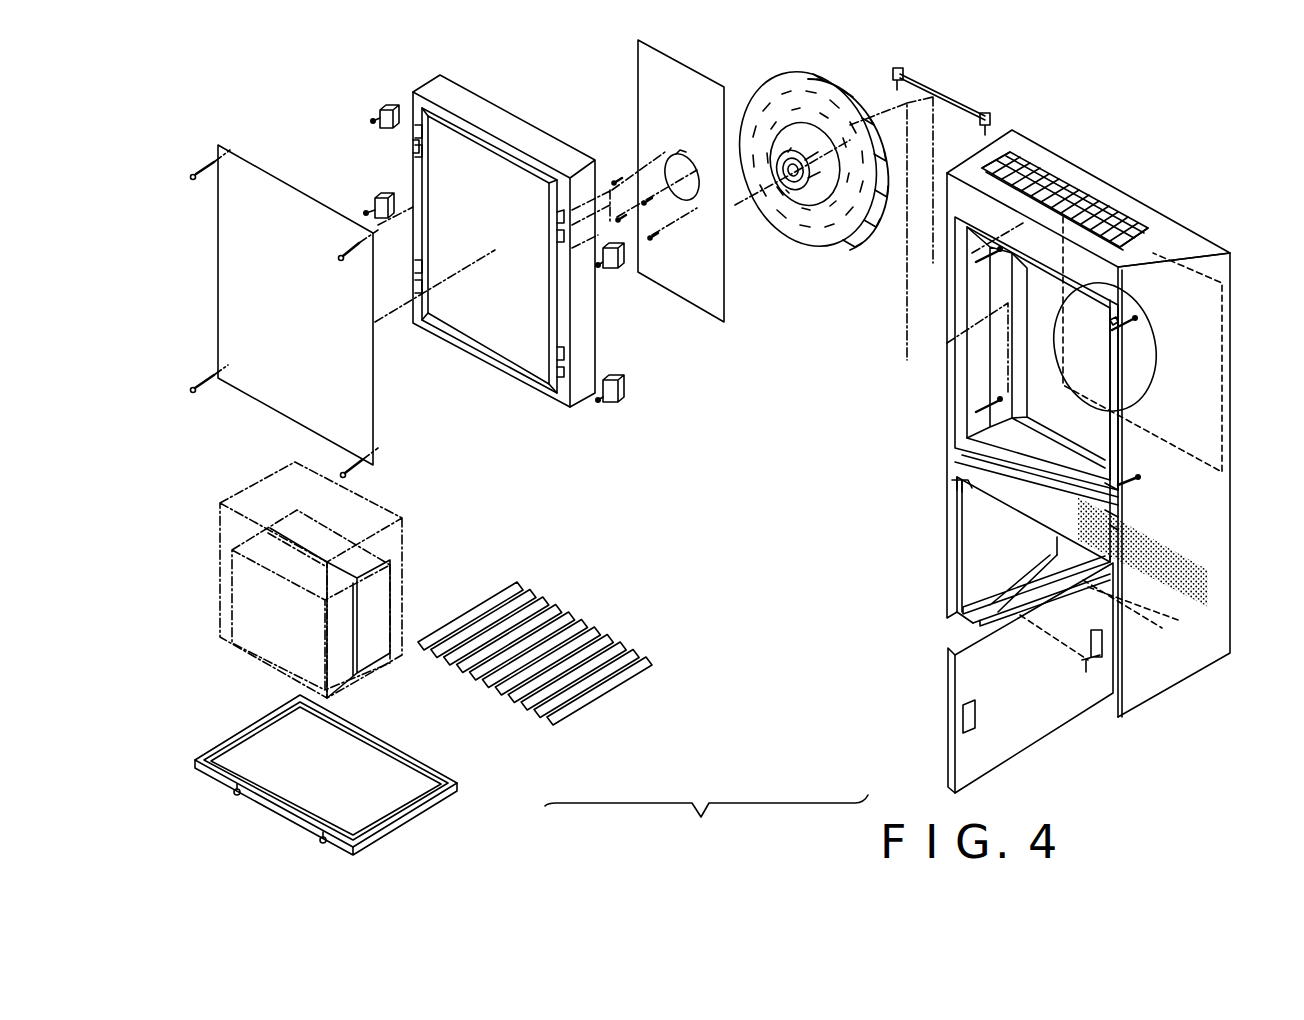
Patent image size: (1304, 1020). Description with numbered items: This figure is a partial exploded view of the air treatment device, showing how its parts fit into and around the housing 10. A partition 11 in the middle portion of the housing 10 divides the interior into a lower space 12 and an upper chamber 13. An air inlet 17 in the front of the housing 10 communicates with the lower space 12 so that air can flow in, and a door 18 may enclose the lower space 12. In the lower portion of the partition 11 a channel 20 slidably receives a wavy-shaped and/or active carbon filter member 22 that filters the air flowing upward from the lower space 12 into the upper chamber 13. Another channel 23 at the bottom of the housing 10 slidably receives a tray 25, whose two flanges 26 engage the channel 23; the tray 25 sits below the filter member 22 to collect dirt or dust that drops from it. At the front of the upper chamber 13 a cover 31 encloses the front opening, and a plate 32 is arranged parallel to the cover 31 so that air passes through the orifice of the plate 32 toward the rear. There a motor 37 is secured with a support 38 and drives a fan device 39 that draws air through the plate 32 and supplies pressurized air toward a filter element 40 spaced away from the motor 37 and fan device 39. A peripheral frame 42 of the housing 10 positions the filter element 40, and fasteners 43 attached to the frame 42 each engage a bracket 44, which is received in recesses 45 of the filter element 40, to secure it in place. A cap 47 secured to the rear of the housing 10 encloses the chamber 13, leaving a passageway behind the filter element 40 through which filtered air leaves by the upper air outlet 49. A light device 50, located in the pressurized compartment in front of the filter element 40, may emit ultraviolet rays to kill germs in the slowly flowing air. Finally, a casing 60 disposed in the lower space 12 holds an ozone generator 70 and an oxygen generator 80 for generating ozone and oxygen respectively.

The housing 10 is at (1187, 655).
The partition 11 is at (1160, 483).
The lower space 12 is at (992, 543).
The upper chamber 13 is at (1103, 430).
The air inlet 17 is at (1207, 583).
The door 18 is at (1050, 722).
The channel 20 is at (960, 487).
The filter member 22 is at (532, 715).
The channel 23 is at (975, 628).
The tray 25 is at (305, 793).
The flanges 26 is at (319, 841).
The cover 31 is at (1157, 254).
The plate 32 is at (1010, 296).
The motor 37 is at (792, 178).
The support 38 is at (718, 300).
The fan device 39 is at (872, 228).
The filter element 40 is at (465, 102).
The peripheral frame 42 is at (1033, 375).
The fasteners 43 is at (1002, 405).
The bracket 44 is at (383, 109).
The recesses 45 is at (411, 147).
The cap 47 is at (245, 266).
The upper air outlet 49 is at (1025, 157).
The light device 50 is at (918, 80).
The casing 60 is at (292, 497).
The ozone generator 70 is at (248, 583).
The oxygen generator 80 is at (370, 588).